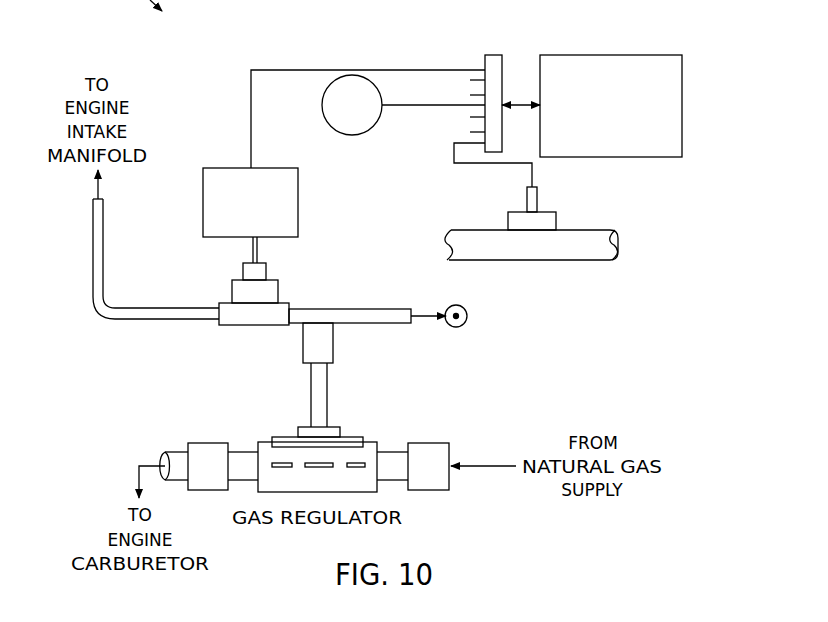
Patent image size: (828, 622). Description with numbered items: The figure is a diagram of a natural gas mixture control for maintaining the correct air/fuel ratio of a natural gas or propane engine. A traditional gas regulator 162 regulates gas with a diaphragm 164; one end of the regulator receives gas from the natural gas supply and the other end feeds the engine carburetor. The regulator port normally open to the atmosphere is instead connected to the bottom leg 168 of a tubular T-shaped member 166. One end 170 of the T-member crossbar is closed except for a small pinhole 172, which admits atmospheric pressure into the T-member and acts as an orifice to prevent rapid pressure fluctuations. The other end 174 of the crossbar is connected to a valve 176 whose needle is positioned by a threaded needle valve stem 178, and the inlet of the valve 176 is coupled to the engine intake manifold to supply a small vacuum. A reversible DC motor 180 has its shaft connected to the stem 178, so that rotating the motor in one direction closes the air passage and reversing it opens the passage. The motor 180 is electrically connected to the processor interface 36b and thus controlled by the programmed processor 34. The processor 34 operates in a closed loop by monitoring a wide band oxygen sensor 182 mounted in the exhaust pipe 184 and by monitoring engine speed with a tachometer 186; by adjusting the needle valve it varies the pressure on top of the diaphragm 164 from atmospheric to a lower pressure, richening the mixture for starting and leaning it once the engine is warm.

The programmed processor 34 is at (682, 105).
The processor interface 36b is at (504, 69).
The gas regulator 162 is at (371, 437).
The diaphragm 164 is at (284, 463).
The tubular T-shaped member 166 is at (339, 343).
The bottom leg 168 is at (303, 343).
The one end of the crossbar 170 is at (365, 308).
The pinhole 172 is at (468, 318).
The other end of the crossbar 174 is at (295, 302).
The valve 176 is at (232, 331).
The needle valve stem 178 is at (250, 251).
The reversible DC motor 180 is at (203, 203).
The wide band oxygen sensor 182 is at (538, 197).
The exhaust pipe 184 is at (580, 262).
The tachometer 186 is at (352, 135).